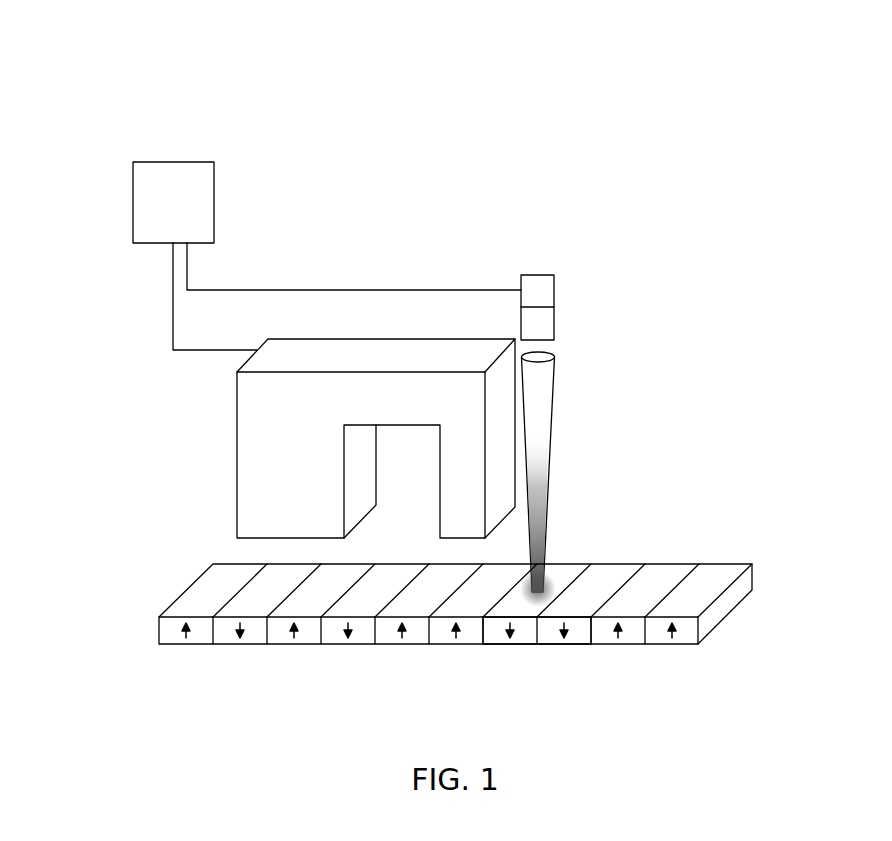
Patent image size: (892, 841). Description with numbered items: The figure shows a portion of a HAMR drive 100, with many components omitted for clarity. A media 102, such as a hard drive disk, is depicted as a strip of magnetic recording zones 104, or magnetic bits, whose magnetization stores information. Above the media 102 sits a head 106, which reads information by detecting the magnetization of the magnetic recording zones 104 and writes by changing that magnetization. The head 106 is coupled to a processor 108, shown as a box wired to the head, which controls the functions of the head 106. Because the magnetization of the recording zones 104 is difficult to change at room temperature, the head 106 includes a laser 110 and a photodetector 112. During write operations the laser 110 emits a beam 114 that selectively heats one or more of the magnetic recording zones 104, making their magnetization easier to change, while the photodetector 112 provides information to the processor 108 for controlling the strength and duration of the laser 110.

The HAMR drive 100 is at (100, 74).
The media 102 is at (120, 562).
The magnetic recording zones 104 is at (508, 644).
The head 106 is at (780, 275).
The processor 108 is at (327, 256).
The laser 110 is at (557, 325).
The photodetector 112 is at (538, 275).
The beam 114 is at (548, 479).